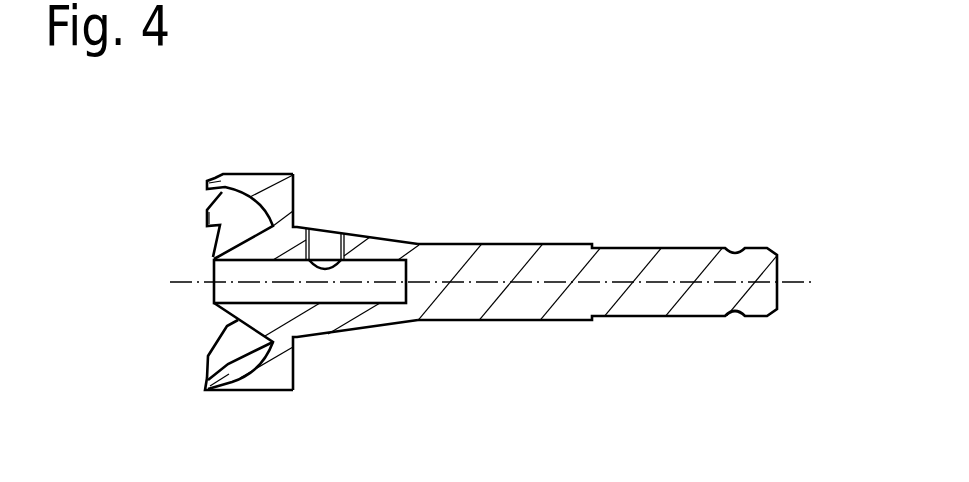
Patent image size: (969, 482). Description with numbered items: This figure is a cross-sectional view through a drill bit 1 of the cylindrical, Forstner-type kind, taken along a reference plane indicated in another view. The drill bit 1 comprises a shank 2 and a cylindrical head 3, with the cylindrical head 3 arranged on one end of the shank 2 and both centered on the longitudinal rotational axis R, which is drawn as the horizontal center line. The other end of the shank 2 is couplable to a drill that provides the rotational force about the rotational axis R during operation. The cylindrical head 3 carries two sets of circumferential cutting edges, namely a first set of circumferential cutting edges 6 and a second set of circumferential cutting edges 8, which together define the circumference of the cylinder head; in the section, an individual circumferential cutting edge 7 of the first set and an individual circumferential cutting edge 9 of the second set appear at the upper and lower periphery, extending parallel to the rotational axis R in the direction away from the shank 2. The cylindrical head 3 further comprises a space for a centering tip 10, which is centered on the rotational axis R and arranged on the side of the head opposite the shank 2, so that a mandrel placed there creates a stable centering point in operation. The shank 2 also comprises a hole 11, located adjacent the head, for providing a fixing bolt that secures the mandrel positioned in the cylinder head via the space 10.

The drill bit 1 is at (492, 214).
The shank 2 is at (566, 244).
The cylindrical head 3 is at (258, 165).
The first set of circumferential cutting edges 6 is at (184, 184).
The circumferential cutting edge 7 is at (208, 184).
The second set of circumferential cutting edges 8 is at (186, 379).
The circumferential cutting edge 9 is at (208, 391).
The space for centering tip 10 is at (214, 288).
The hole 11 is at (325, 242).
The rotational axis R is at (818, 283).